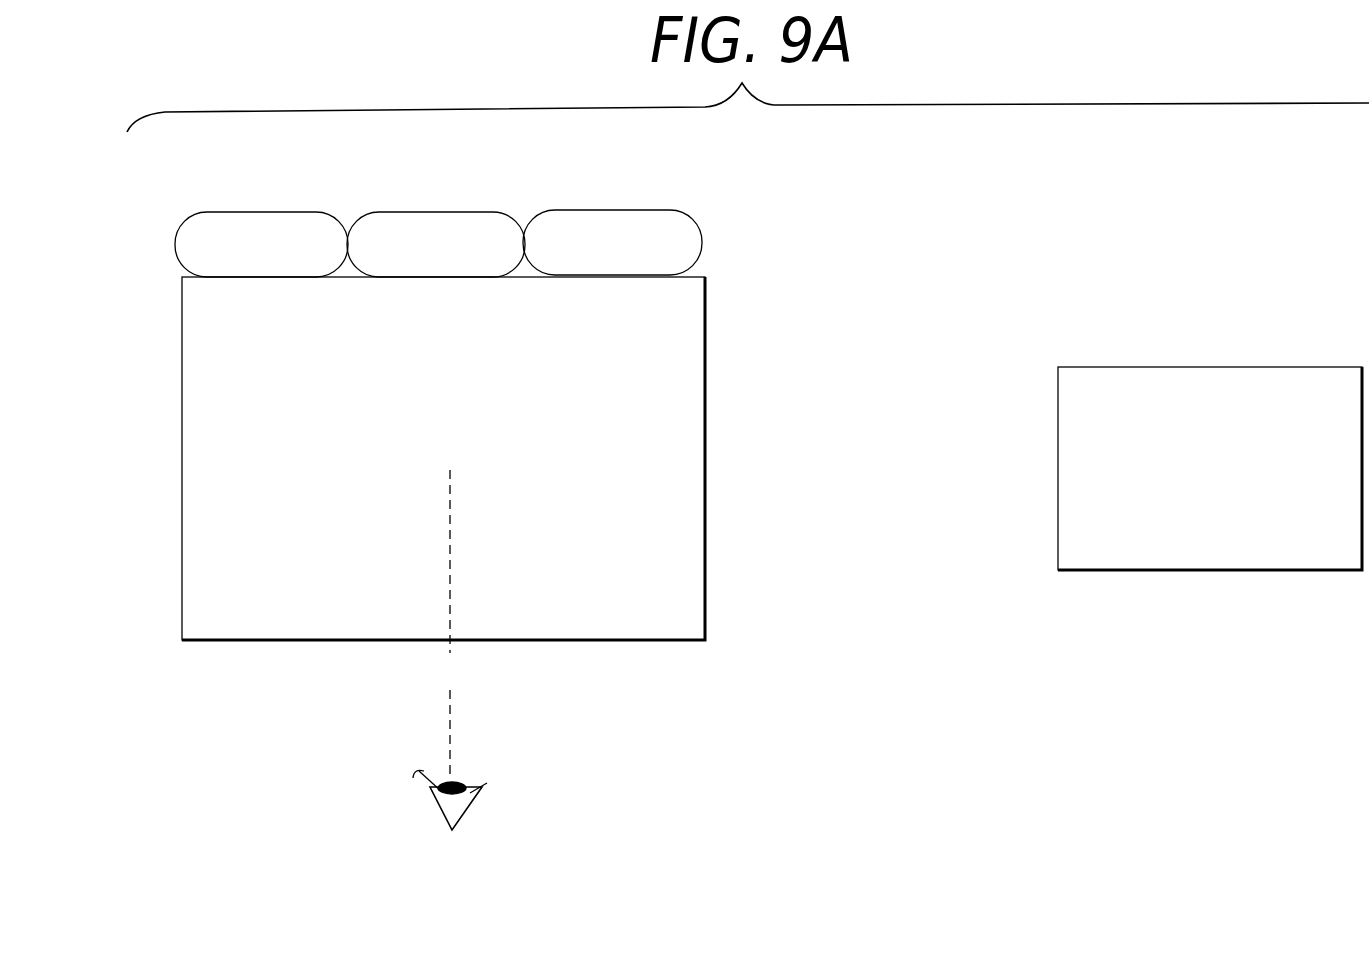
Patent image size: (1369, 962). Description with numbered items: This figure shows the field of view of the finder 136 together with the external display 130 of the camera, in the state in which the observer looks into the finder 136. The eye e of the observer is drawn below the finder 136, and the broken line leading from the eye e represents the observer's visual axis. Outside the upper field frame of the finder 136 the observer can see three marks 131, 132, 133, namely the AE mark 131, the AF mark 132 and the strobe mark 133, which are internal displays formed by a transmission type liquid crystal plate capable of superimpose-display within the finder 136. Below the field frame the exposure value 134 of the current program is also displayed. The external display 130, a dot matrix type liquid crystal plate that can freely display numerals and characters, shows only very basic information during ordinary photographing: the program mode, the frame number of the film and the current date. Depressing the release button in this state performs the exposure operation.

The external display 130 is at (1281, 367).
The AE display mark 131 is at (294, 218).
The AF display mark 132 is at (456, 218).
The strobe display mark 133 is at (640, 215).
The exposure value display 134 is at (503, 672).
The finder 136 is at (706, 328).
The eye e is at (465, 802).